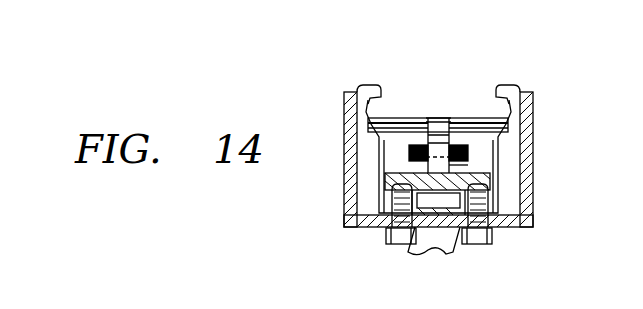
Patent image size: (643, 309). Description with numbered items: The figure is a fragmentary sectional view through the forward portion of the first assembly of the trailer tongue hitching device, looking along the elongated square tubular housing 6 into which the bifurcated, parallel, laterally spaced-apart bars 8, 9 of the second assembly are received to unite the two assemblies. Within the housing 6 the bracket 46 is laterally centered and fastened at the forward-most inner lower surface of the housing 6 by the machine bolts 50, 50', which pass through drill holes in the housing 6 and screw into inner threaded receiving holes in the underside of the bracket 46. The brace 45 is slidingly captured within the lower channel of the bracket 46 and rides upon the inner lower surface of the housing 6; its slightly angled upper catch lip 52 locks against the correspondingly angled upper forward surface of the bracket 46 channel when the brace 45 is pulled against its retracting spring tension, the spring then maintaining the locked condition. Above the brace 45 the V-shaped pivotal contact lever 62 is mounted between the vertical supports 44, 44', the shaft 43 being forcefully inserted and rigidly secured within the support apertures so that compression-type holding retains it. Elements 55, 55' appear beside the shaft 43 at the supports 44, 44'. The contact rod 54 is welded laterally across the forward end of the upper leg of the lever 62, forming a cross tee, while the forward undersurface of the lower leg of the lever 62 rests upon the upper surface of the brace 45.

The housing 6 is at (344, 110).
The bar 8 is at (372, 92).
The bar 9 is at (505, 92).
The shaft 43 is at (438, 138).
The vertical support 44 is at (374, 103).
The vertical support 44' is at (516, 182).
The brace 45 is at (425, 228).
The bracket 46 is at (388, 183).
The machine bolt 50 is at (370, 235).
The machine bolt 50' is at (503, 235).
The catch lip 52 is at (440, 190).
The contact rod 54 is at (399, 118).
The nut 55 is at (365, 152).
The nut 55' is at (516, 153).
The pivotal contact lever 62 is at (451, 124).